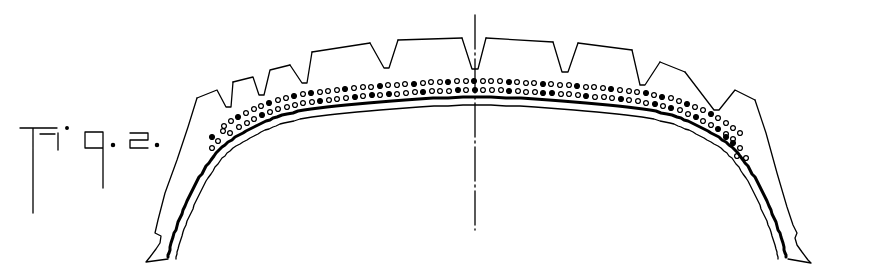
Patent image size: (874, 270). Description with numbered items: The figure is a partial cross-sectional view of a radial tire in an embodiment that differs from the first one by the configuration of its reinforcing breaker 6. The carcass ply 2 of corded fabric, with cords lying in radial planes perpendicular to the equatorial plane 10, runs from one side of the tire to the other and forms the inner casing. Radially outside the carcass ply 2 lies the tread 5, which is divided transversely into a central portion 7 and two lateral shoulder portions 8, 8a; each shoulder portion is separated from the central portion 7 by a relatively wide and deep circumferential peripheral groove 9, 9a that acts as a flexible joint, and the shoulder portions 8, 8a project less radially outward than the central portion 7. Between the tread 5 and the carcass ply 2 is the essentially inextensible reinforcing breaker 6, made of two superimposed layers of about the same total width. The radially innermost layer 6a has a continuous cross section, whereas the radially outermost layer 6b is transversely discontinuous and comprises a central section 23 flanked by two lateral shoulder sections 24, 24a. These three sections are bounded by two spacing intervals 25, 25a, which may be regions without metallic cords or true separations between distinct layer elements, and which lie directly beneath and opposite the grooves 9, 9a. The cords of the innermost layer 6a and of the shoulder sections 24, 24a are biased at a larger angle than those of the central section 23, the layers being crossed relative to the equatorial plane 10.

The carcass ply 2 is at (210, 163).
The tread 5 is at (411, 30).
The reinforcing breaker 6 is at (393, 98).
The radially innermost layer 6a is at (552, 92).
The radially outermost layer 6b is at (408, 82).
The central portion 7 is at (524, 32).
The lateral shoulder portion 8 is at (240, 72).
The lateral shoulder portion 8a is at (716, 77).
The circumferential peripheral groove 9 is at (305, 72).
The circumferential peripheral groove 9a is at (644, 85).
The equatorial plane 10 is at (475, 202).
The central section 23 is at (433, 80).
The lateral shoulder section 24 is at (237, 122).
The lateral shoulder section 24a is at (731, 128).
The spacing interval 25 is at (310, 88).
The spacing interval 25a is at (636, 90).